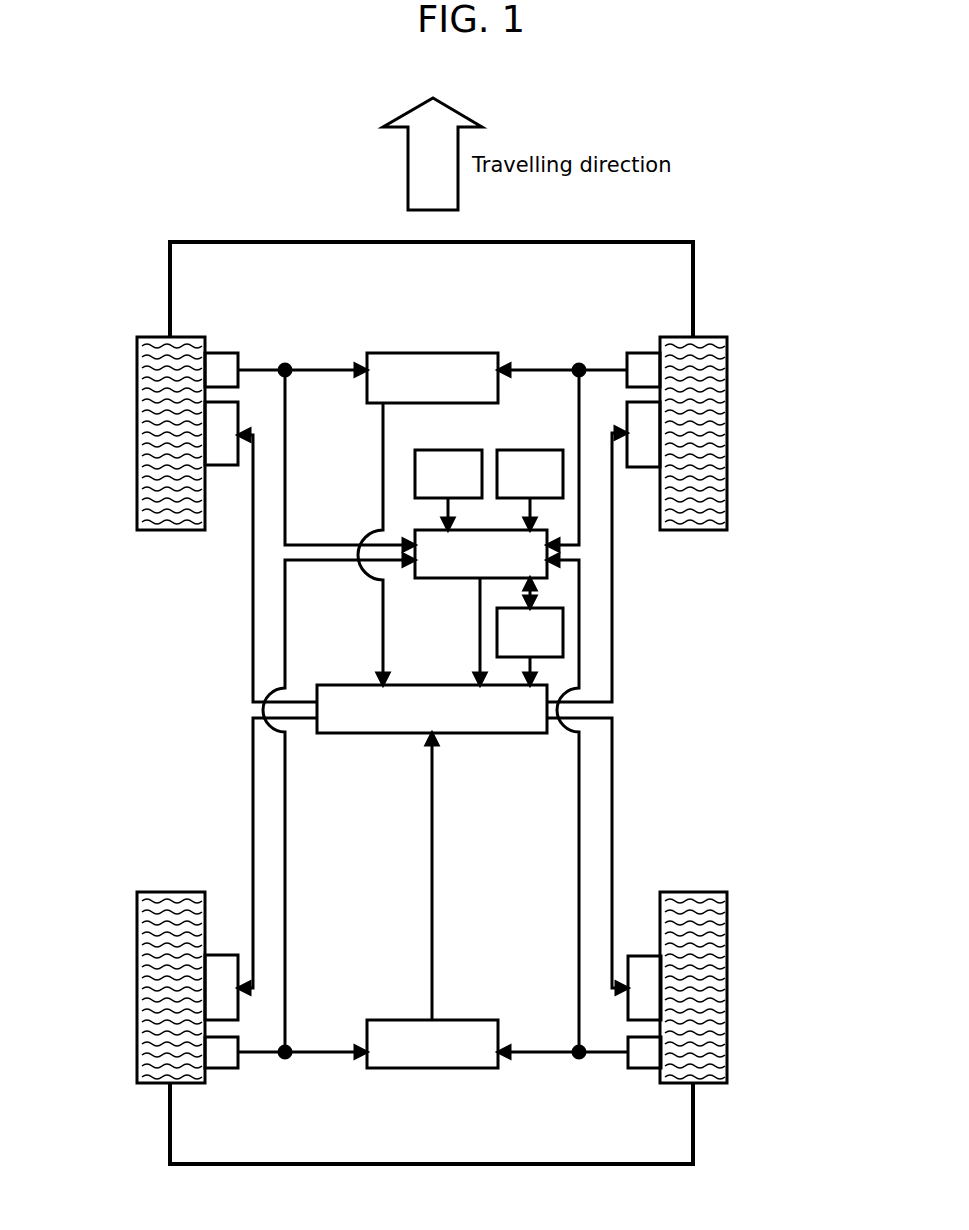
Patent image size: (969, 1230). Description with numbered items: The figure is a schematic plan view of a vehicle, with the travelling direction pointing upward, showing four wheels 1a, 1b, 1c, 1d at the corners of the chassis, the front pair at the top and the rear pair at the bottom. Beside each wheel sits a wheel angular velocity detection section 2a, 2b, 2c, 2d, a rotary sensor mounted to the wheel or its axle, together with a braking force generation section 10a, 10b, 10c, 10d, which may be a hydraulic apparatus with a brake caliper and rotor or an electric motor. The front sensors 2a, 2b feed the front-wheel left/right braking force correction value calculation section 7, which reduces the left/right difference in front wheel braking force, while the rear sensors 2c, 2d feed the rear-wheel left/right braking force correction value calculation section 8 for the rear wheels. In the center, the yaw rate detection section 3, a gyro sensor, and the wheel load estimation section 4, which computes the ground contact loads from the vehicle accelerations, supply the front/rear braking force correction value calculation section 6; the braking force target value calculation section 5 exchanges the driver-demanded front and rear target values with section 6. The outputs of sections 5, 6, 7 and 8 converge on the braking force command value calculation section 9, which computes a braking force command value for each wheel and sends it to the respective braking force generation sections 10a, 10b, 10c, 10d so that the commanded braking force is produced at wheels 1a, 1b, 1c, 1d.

The wheel 1a is at (170, 434).
The wheel 1b is at (700, 434).
The wheel 1c is at (167, 982).
The wheel 1d is at (700, 983).
The wheel angular velocity detection section 2a is at (220, 370).
The wheel angular velocity detection section 2b is at (650, 370).
The wheel angular velocity detection section 2c is at (218, 1058).
The wheel angular velocity detection section 2d is at (648, 1058).
The braking force generation section 10a is at (220, 447).
The braking force generation section 10b is at (645, 447).
The braking force generation section 10c is at (218, 973).
The braking force generation section 10d is at (648, 975).
The yaw rate detection section 3 is at (437, 490).
The wheel load estimation section 4 is at (519, 490).
The braking force target value calculation section 5 is at (519, 648).
The front/rear braking force correction value calculation section 6 is at (470, 570).
The front-wheel left/right braking force correction value calculation section 7 is at (421, 394).
The rear-wheel left/right braking force correction value calculation section 8 is at (421, 1060).
The braking force command value calculation section 9 is at (421, 725).